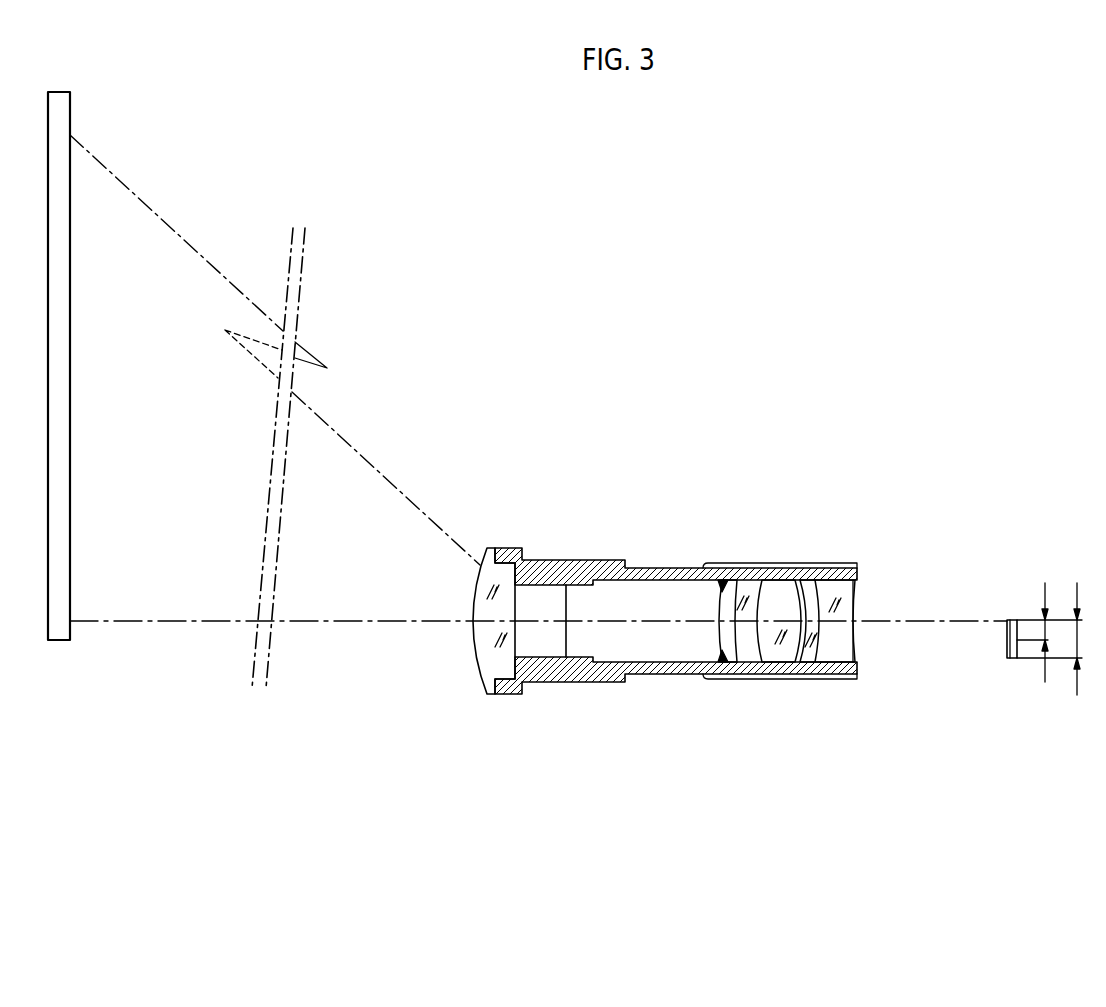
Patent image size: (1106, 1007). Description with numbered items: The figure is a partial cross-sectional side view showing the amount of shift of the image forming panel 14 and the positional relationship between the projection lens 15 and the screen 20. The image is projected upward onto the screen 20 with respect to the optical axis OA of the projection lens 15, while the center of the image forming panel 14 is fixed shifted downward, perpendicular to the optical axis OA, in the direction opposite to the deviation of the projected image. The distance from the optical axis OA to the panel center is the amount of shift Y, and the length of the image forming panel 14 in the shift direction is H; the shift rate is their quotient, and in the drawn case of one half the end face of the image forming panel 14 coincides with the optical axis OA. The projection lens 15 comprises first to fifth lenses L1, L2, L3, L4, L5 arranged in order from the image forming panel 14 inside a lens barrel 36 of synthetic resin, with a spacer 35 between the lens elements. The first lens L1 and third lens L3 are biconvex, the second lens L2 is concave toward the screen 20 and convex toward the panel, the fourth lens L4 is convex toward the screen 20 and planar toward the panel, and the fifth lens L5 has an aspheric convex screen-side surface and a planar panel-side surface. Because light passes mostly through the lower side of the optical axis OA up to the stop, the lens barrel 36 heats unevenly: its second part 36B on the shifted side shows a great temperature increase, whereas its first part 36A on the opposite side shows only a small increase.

The screen 20 is at (70, 119).
The projection lens 15 is at (655, 487).
The lens barrel 36 is at (682, 568).
The spacer 35 is at (720, 574).
The first part 36A is at (786, 563).
The second part 36B is at (773, 679).
The image forming panel 14 is at (1008, 660).
The first lens L1 is at (855, 652).
The second lens L2 is at (808, 658).
The third lens L3 is at (775, 652).
The fourth lens L4 is at (735, 652).
The fifth lens L5 is at (525, 652).
The optical axis OA is at (937, 620).
The amount of shift Y is at (1035, 632).
The length of the image forming panel H is at (1069, 639).